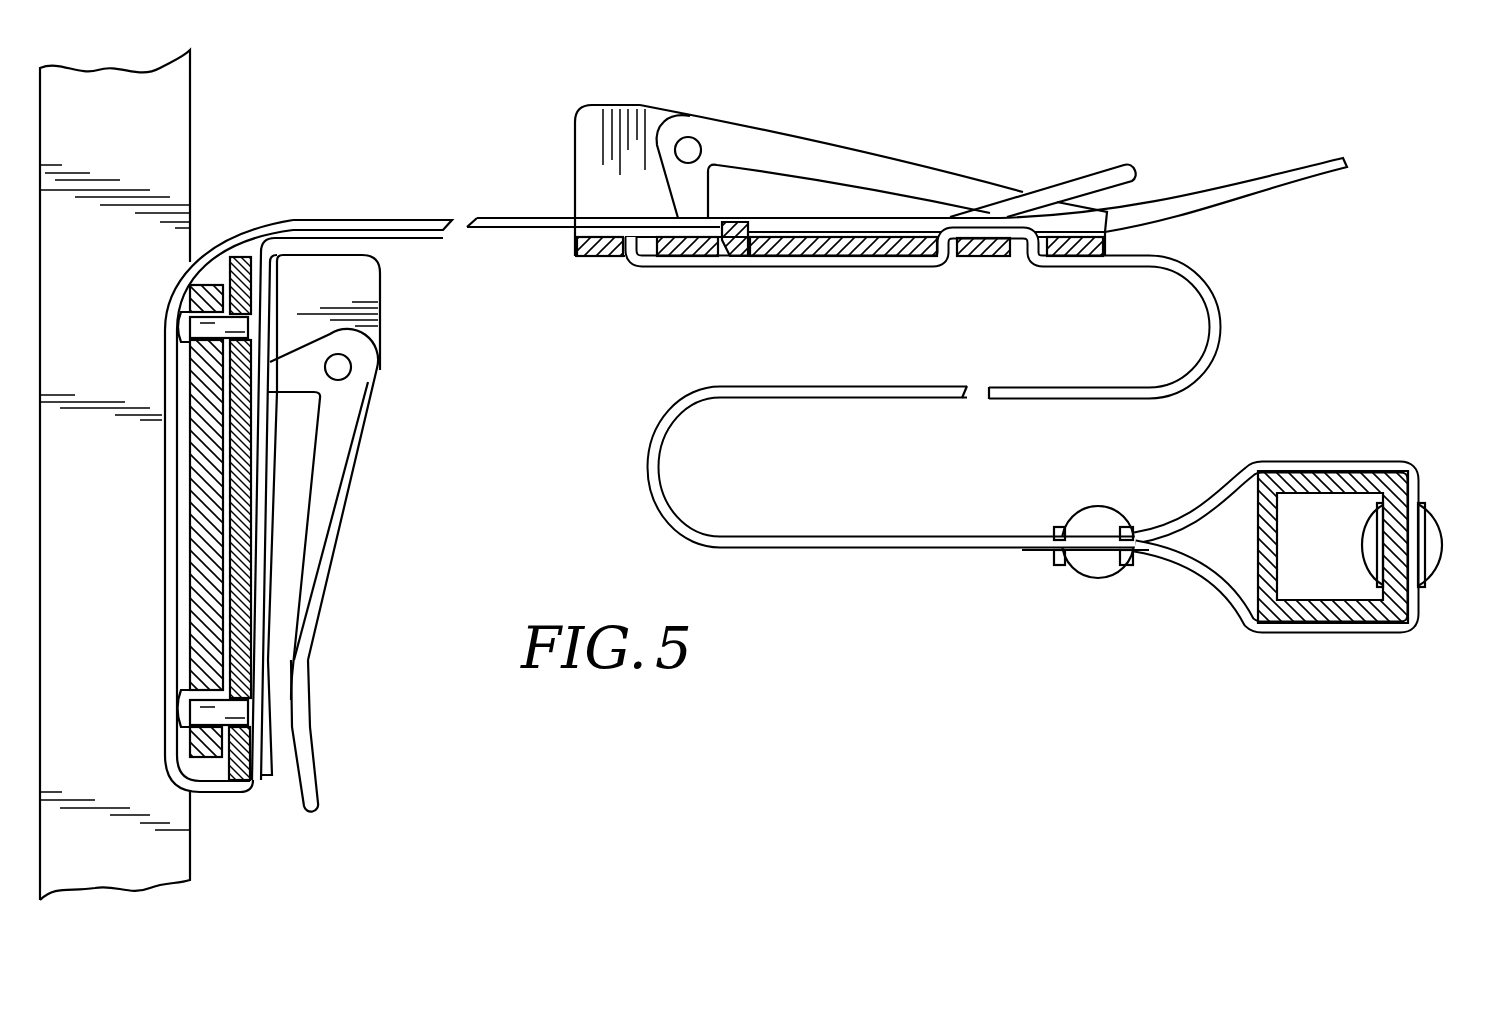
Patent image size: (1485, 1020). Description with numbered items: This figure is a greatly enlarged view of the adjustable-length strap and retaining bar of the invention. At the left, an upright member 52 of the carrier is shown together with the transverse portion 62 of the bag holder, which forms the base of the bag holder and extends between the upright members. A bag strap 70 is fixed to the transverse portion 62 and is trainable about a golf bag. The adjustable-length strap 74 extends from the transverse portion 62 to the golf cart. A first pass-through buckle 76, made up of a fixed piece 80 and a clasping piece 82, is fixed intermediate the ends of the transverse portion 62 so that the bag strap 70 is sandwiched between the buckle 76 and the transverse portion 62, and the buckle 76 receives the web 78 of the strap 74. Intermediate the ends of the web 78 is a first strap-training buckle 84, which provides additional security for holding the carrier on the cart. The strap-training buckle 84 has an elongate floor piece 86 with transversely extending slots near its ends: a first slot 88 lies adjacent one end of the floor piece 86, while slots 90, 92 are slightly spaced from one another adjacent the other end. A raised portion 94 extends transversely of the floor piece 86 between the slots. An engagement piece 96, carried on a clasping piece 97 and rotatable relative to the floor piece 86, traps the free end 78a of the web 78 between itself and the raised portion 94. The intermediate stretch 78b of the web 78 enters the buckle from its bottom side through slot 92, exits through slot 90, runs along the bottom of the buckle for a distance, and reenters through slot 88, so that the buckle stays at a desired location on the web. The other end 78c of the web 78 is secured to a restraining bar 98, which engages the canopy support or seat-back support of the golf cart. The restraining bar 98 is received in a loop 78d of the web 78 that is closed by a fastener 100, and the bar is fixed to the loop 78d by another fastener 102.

The upright member 52 is at (192, 160).
The transverse portion 62 is at (190, 490).
The bag strap 70 is at (225, 578).
The adjustable-length strap 74 is at (893, 131).
The first pass-through buckle 76 is at (380, 350).
The web portion 78 is at (533, 236).
The free end of web 78a is at (1245, 186).
The intermediate stretch of web 78b is at (712, 267).
The other end of web 78c is at (875, 550).
The loop of web 78d is at (1216, 503).
The fixed piece 80 is at (373, 292).
The clasping piece 82 is at (320, 781).
The first strap-training buckle 84 is at (655, 106).
The elongate floor piece 86 is at (815, 257).
The first slot 88 is at (628, 259).
The slot 90 is at (947, 258).
The slot 92 is at (1025, 255).
The raised portion 94 is at (731, 222).
The engagement piece 96 is at (690, 206).
The clasping piece 97 is at (1098, 170).
The restraining bar 98 is at (1310, 625).
The fastener 100 is at (1085, 583).
The fastener 102 is at (1440, 515).